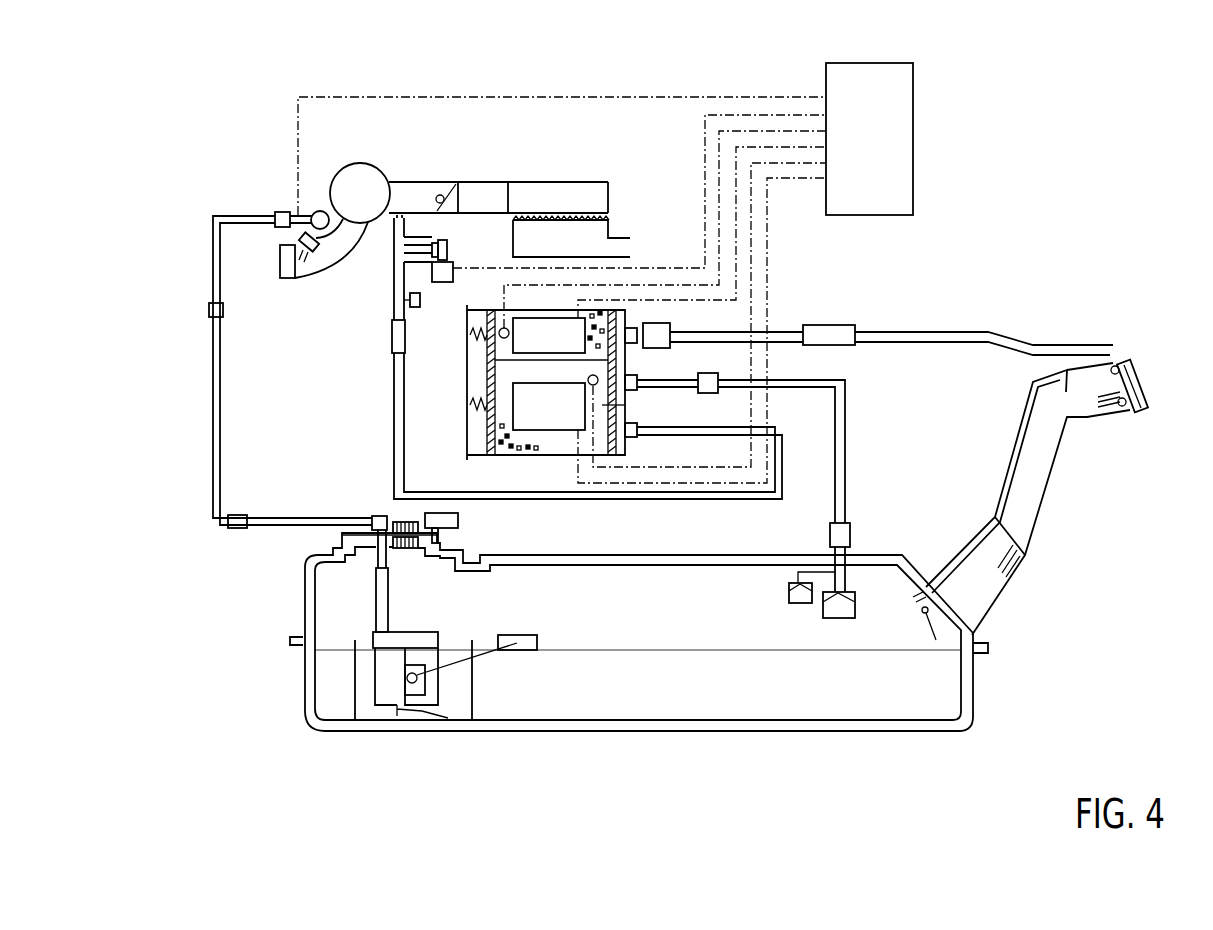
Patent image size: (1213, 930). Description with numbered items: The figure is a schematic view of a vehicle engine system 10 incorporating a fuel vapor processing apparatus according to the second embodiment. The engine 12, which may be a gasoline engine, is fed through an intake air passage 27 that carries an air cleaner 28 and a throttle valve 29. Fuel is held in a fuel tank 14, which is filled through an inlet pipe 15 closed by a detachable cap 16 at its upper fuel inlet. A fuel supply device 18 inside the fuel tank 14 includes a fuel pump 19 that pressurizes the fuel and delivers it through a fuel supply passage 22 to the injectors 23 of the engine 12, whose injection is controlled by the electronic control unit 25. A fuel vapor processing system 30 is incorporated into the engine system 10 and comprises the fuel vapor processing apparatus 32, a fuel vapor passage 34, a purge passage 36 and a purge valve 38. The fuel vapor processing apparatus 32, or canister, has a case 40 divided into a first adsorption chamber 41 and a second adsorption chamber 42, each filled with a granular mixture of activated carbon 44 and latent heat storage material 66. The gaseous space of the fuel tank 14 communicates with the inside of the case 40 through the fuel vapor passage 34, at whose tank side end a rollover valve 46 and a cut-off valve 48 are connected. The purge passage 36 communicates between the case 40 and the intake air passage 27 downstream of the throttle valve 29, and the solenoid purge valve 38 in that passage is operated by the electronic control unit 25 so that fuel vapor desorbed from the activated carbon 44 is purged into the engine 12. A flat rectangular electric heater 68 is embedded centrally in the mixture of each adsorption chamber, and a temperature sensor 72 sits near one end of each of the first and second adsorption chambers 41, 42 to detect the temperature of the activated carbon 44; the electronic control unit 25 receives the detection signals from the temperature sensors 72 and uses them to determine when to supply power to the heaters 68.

The engine system 10 is at (252, 118).
The engine 12 is at (288, 278).
The fuel tank 14 is at (976, 683).
The inlet pipe 15 is at (1043, 495).
The cap 16 is at (1140, 375).
The fuel supply device 18 is at (397, 683).
The fuel pump 19 is at (385, 700).
The fuel supply passage 22 is at (213, 450).
The injectors 23 is at (303, 238).
The electronic control unit 25 is at (914, 95).
The intake air passage 27 is at (410, 183).
The air cleaner 28 is at (559, 183).
The throttle valve 29 is at (441, 194).
The fuel vapor processing system 30 is at (779, 315).
The fuel vapor processing apparatus 32 is at (552, 391).
The fuel vapor passage 34 is at (847, 408).
The purge passage 36 is at (392, 412).
The purge valve 38 is at (442, 284).
The case 40 is at (563, 445).
The first adsorption chamber 41 is at (554, 450).
The second adsorption chamber 42 is at (605, 352).
The activated carbon 44 is at (512, 455).
The rollover valve 46 is at (845, 612).
The cut-off valve 48 is at (792, 603).
The latent heat storage material 66 is at (535, 455).
The electric heater 68 is at (550, 327).
The temperature sensor 72 is at (500, 338).